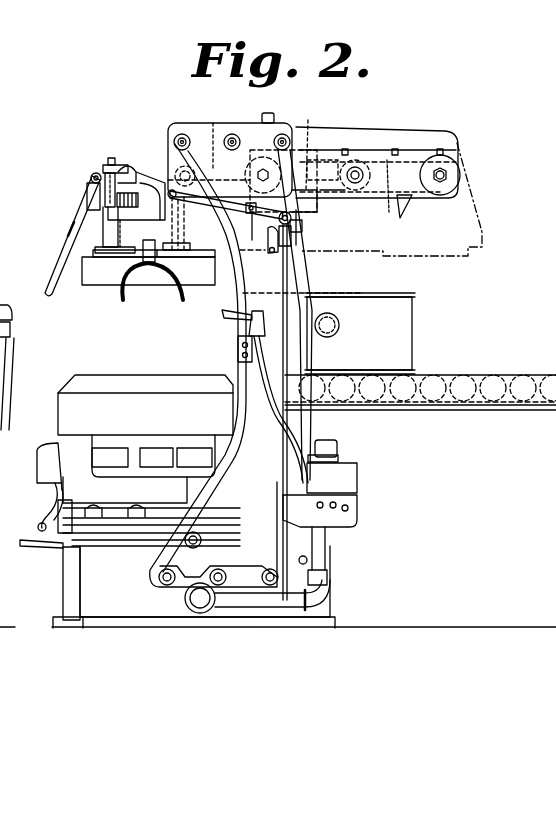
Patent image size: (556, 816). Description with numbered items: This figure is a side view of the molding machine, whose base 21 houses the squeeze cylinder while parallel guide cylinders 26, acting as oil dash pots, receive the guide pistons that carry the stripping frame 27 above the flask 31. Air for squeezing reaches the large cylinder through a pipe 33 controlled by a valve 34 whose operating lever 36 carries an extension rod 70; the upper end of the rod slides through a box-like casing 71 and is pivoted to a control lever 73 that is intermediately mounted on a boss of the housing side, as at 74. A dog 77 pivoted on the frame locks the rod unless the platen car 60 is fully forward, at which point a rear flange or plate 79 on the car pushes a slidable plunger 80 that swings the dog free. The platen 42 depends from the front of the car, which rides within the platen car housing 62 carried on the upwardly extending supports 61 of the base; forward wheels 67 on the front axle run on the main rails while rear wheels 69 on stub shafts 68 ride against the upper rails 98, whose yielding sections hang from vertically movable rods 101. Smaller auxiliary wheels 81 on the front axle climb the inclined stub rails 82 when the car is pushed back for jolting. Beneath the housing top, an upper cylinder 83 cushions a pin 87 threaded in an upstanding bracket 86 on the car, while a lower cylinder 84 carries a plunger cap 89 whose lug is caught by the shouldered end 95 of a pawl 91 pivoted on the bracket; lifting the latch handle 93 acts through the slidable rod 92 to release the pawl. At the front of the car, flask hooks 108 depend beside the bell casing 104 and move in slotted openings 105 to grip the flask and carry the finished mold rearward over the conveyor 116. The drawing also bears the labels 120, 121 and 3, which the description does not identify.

The base 21 is at (115, 572).
The guide cylinders 26 is at (65, 598).
The stripping frame 27 is at (152, 408).
The flask 31 is at (367, 323).
The pipe 33 is at (275, 610).
The valve 34 is at (357, 480).
The operating lever 36 is at (300, 523).
The platen 42 is at (90, 283).
The platen car 60 is at (160, 203).
The arms or supports 61 is at (247, 445).
The platen car housing 62 is at (300, 124).
The forward wheels 67 is at (213, 122).
The stub shafts 68 is at (255, 190).
The rear wheels 69 is at (245, 163).
The extension rod 70 is at (282, 455).
The box-like casing 71 is at (289, 250).
The control lever 73 is at (232, 212).
The pivot on boss 74 is at (252, 241).
The dog 77 is at (271, 254).
The rear lateral flange or plate 79 is at (300, 240).
The slidable plunger 80 is at (303, 226).
The auxiliary wheels 81 is at (364, 163).
The inclined stub rails 82 is at (401, 219).
The upper cylinder 83 is at (318, 160).
The lower cylinder 84 is at (332, 185).
The upstanding bracket 86 is at (108, 164).
The pin 87 is at (122, 166).
The cap 89 is at (308, 120).
The pawl 91 is at (131, 172).
The slidable rod 92 is at (96, 212).
The latch handle 93 is at (67, 235).
The shouldered end 95 is at (143, 178).
The upper rails 98 is at (423, 153).
The vertically movable rods 101 is at (272, 102).
The bell casing 104 is at (128, 209).
The slotted openings 105 is at (170, 257).
The flask hooks 108 is at (145, 282).
The conveyor 116 is at (480, 377).
The block 120 is at (0, 248).
The block 121 is at (0, 270).
The part 3 is at (4, 589).